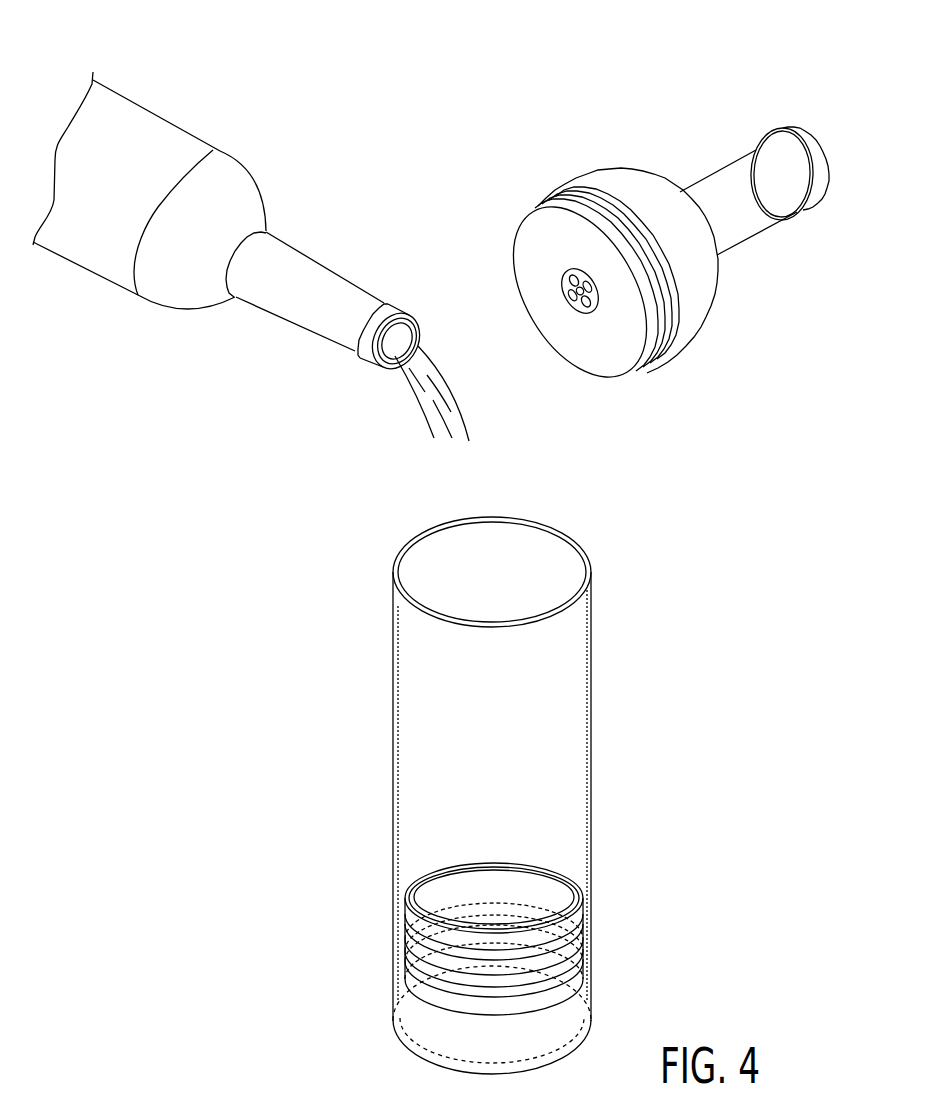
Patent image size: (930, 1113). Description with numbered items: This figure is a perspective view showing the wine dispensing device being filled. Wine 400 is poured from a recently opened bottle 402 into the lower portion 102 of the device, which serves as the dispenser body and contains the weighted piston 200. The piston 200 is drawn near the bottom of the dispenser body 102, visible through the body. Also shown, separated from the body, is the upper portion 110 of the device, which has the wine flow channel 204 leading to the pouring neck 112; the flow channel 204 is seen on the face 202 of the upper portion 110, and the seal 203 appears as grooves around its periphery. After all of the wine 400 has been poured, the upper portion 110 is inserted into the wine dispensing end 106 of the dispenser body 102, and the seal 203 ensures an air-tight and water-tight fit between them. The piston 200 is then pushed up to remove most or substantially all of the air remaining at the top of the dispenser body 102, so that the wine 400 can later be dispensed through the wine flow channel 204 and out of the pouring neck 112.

The lower portion 102 is at (550, 795).
The wine dispensing end 106 is at (590, 588).
The upper portion 110 is at (655, 211).
The pouring neck 112 is at (758, 233).
The weighted piston 200 is at (512, 921).
The cap face 202 is at (620, 360).
The seal 203 is at (657, 368).
The wine flow channel 204 is at (562, 277).
The wine 400 is at (473, 413).
The bottle 402 is at (218, 137).